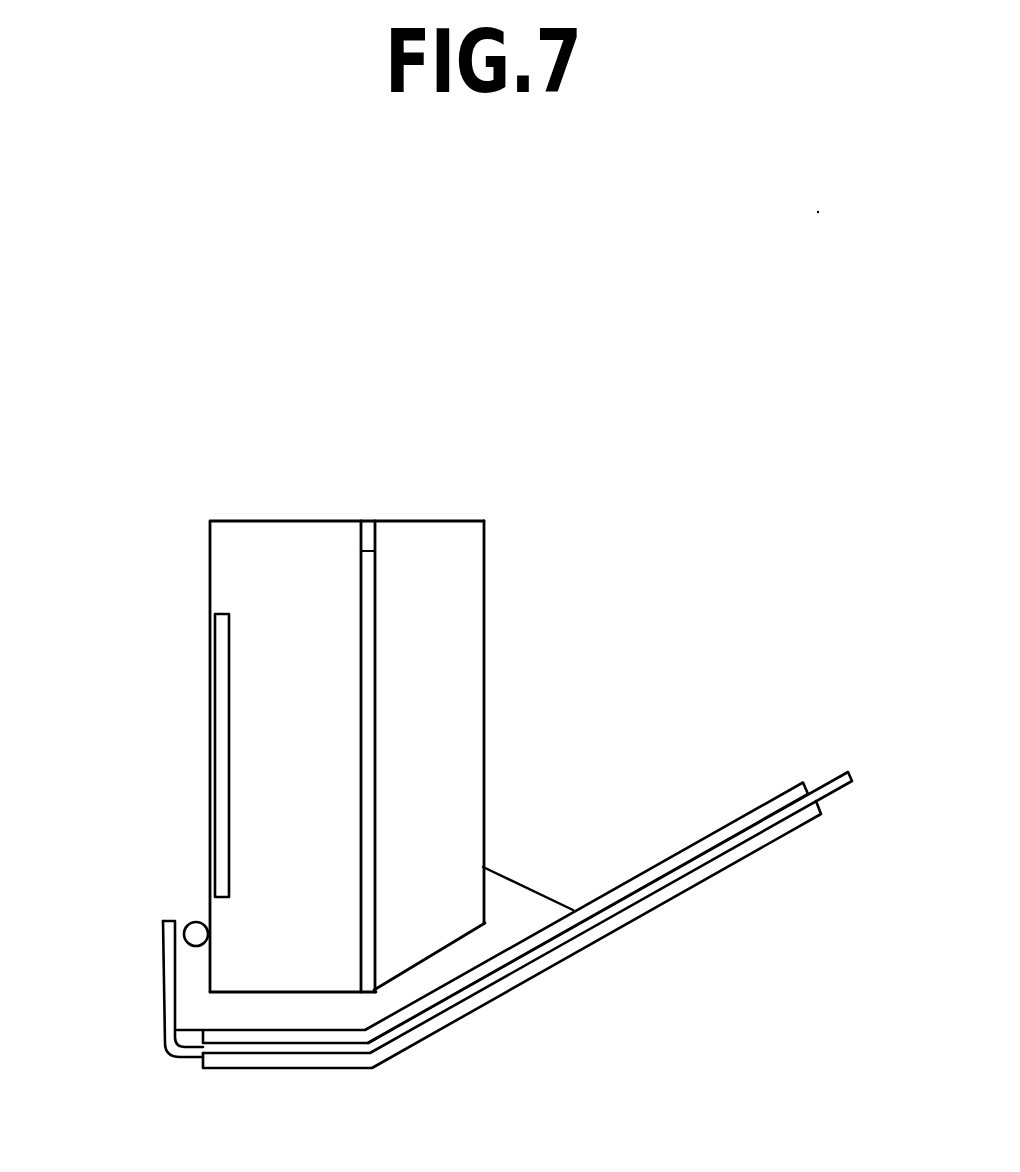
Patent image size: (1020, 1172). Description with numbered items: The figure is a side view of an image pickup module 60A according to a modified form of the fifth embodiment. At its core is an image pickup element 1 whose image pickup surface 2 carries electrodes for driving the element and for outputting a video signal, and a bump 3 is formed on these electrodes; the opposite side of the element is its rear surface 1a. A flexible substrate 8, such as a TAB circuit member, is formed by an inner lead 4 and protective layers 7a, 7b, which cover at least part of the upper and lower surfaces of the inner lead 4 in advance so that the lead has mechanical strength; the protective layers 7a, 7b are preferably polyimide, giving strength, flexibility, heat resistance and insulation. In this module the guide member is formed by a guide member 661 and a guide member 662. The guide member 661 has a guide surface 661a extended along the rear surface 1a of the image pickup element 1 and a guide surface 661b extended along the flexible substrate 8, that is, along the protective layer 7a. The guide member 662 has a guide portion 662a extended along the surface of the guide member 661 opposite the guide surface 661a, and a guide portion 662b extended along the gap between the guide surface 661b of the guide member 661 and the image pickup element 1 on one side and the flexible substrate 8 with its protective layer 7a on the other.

The image pickup module 60A is at (677, 442).
The image pickup element 1 is at (242, 550).
The rear surface 1a is at (375, 551).
The image pickup surface 2 is at (210, 688).
The bump 3 is at (193, 923).
The inner lead 4 is at (165, 1006).
The guide member 661 is at (503, 696).
The guide surface 661a is at (375, 663).
The guide surface 661b is at (447, 945).
The guide member 662 is at (480, 914).
The guide portion 662a is at (667, 1027).
The guide portion 662b is at (602, 948).
The protective layer 7a is at (758, 800).
The protective layer 7b is at (713, 883).
The flexible substrate 8 is at (876, 765).